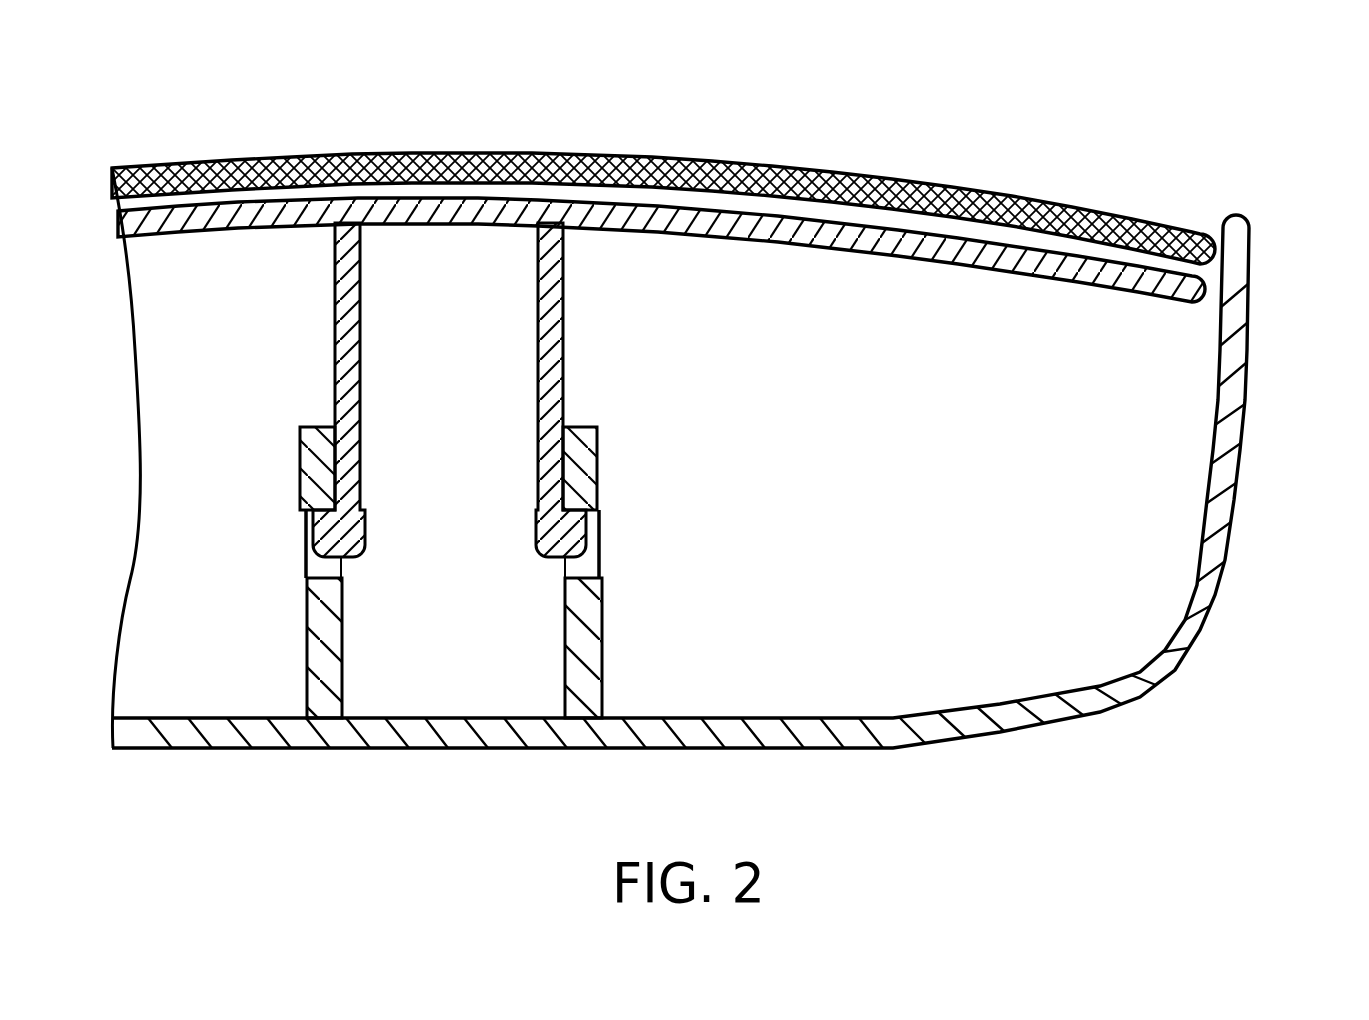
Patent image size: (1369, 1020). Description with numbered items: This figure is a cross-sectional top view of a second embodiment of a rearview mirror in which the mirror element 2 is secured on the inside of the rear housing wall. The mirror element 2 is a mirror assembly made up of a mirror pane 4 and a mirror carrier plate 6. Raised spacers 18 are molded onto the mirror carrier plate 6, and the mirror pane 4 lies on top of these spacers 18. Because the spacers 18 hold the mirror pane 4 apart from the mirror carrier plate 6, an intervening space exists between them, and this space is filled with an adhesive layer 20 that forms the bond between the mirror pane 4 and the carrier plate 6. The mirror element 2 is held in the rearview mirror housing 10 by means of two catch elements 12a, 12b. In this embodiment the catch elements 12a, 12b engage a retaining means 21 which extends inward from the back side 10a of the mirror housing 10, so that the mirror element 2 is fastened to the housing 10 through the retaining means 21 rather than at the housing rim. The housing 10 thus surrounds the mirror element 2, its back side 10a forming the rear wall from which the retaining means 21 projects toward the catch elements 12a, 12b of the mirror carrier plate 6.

The mirror element 2 is at (663, 213).
The mirror pane 4 is at (1043, 205).
The mirror carrier plate 6 is at (965, 253).
The rearview mirror housing 10 is at (1225, 553).
The back side of the mirror housing 10a is at (428, 740).
The catch element 12a is at (335, 325).
The catch element 12b is at (563, 363).
The spacers 18 is at (450, 192).
The adhesive layer 20 is at (893, 255).
The retaining means 21 is at (616, 661).